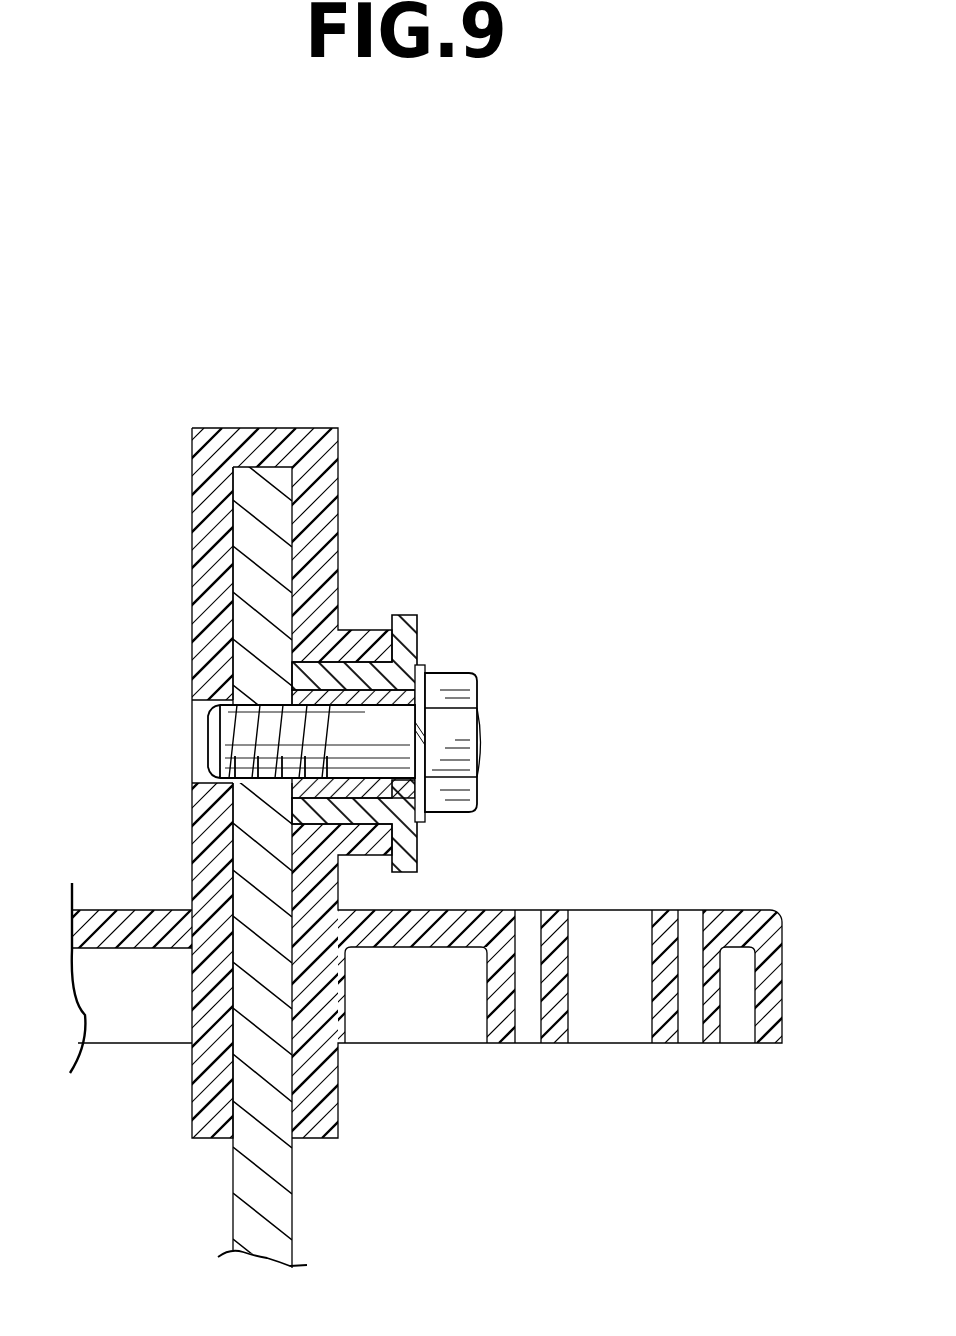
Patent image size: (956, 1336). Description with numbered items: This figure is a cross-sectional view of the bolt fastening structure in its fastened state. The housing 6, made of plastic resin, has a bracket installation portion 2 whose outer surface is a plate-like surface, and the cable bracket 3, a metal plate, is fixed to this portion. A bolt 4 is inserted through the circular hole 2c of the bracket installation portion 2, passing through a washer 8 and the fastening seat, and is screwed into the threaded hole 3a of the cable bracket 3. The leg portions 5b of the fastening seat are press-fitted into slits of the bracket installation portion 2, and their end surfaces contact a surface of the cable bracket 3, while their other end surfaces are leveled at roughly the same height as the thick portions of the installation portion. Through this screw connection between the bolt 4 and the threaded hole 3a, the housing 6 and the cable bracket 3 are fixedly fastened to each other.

The bracket installation portion 2 is at (313, 418).
The housing 6 is at (216, 405).
The cable bracket 3 is at (272, 1222).
The threaded hole 3a is at (267, 713).
The bolt 4 is at (480, 740).
The leg portion 5b is at (370, 662).
The circular hole 2c is at (373, 715).
The washer 8 is at (417, 640).